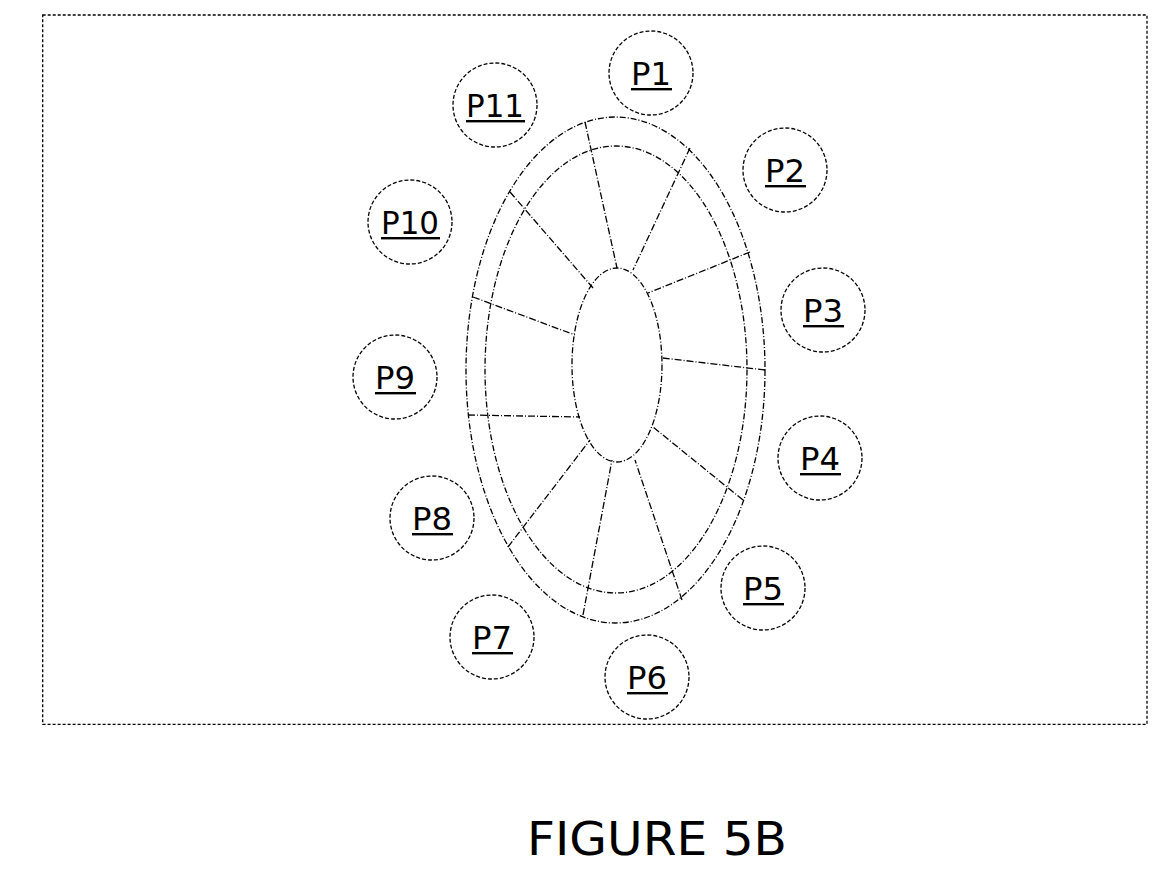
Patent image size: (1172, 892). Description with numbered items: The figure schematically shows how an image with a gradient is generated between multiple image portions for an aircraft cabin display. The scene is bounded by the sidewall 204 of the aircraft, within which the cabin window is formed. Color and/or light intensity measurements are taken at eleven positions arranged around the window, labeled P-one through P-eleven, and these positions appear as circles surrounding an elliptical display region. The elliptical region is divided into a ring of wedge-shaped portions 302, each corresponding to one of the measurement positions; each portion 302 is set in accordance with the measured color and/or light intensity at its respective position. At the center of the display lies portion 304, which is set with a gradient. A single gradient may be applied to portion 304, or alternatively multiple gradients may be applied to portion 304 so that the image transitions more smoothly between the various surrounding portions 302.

The sidewall 204 is at (595, 369).
The first portion 302 is at (616, 368).
The second portion 304 is at (617, 365).